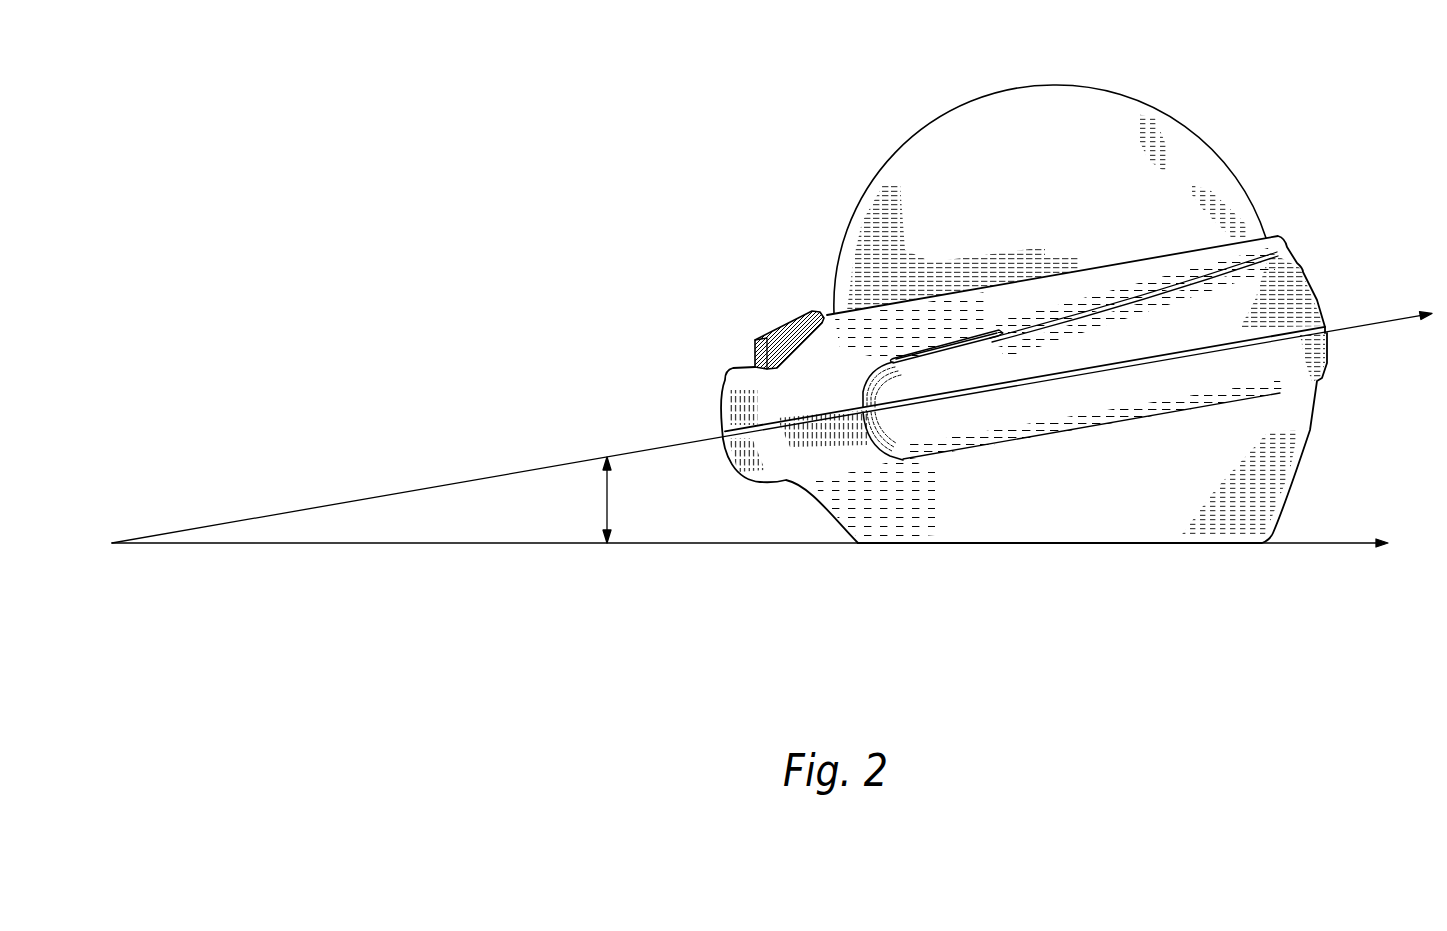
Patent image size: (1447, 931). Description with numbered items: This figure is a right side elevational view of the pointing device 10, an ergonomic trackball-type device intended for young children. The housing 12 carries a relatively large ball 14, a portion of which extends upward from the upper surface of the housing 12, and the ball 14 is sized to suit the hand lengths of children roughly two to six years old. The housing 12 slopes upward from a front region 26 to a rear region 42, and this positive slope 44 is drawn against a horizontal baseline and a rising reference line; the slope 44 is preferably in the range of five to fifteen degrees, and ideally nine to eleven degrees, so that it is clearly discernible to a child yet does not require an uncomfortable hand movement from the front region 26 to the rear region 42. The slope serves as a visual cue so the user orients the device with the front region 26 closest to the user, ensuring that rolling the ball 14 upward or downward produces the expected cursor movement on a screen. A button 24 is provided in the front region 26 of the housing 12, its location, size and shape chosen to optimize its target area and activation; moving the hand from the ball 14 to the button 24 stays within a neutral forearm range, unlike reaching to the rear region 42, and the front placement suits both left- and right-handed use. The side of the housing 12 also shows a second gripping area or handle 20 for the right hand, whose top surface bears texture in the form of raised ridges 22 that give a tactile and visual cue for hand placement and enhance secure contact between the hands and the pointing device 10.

The pointing device 10 is at (772, 349).
The housing 12 is at (1083, 522).
The ball 14 is at (950, 142).
The second gripping area or handle 20 is at (912, 427).
The raised ridges 22 is at (927, 357).
The button 24 is at (778, 345).
The front region 26 is at (738, 351).
The rear region 42 is at (1303, 232).
The slope 44 is at (772, 429).